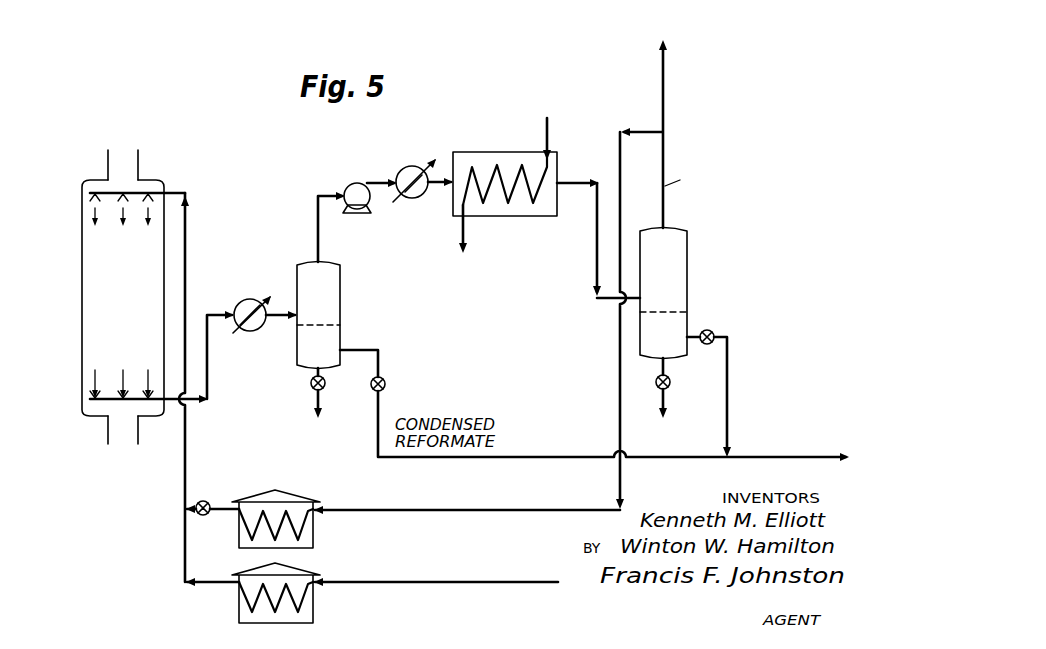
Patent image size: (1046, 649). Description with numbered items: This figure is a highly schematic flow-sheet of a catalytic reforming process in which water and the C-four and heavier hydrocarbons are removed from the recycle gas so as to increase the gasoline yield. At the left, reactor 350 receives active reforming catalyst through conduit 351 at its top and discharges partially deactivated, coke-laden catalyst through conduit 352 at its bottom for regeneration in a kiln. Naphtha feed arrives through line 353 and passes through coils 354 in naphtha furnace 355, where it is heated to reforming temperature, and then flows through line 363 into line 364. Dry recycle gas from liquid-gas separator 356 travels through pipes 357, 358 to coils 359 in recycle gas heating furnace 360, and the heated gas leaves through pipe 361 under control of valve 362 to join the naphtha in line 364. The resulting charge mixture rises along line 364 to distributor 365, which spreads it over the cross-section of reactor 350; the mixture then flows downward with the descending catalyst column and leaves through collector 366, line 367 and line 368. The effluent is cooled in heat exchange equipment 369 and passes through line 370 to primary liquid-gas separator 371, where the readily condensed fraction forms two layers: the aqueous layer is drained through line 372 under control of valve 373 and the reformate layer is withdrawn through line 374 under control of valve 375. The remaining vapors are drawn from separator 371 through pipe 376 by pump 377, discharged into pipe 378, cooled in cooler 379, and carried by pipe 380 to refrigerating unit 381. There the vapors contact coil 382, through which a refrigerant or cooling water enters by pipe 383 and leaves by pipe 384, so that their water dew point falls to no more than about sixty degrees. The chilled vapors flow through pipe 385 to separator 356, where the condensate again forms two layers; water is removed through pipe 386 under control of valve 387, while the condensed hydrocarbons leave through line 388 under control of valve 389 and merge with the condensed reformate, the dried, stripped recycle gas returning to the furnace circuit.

The reactor 350 is at (123, 298).
The conduit 351 is at (140, 169).
The conduit 352 is at (107, 430).
The line 353 is at (503, 585).
The coils 354 is at (240, 592).
The naphtha furnace 355 is at (238, 613).
The liquid-gas separator 356 is at (680, 250).
The pipe 357 is at (665, 210).
The pipe 358 is at (423, 509).
The coils 359 is at (245, 520).
The recycle gas heating furnace 360 is at (303, 548).
The pipe 361 is at (222, 506).
The valve 362 is at (203, 500).
The line 363 is at (207, 578).
The line 364 is at (182, 476).
The distributor 365 is at (137, 200).
The collector 366 is at (103, 396).
The line 367 is at (209, 370).
The line 368 is at (214, 308).
The heat exchange equipment 369 is at (257, 300).
The line 370 is at (270, 318).
The primary liquid-gas separator 371 is at (330, 300).
The line 372 is at (321, 402).
The valve 373 is at (311, 383).
The line 374 is at (352, 350).
The valve 375 is at (387, 383).
The pipe 376 is at (317, 212).
The pump 377 is at (346, 188).
The pipe 378 is at (367, 180).
The cooler 379 is at (398, 205).
The pipe 380 is at (437, 176).
The refrigerating unit 381 is at (495, 152).
The coil 382 is at (530, 208).
The pipe 383 is at (550, 135).
The pipe 384 is at (468, 228).
The pipe 385 is at (575, 178).
The pipe 386 is at (668, 400).
The valve 387 is at (672, 380).
The line 388 is at (730, 370).
The valve 389 is at (707, 328).